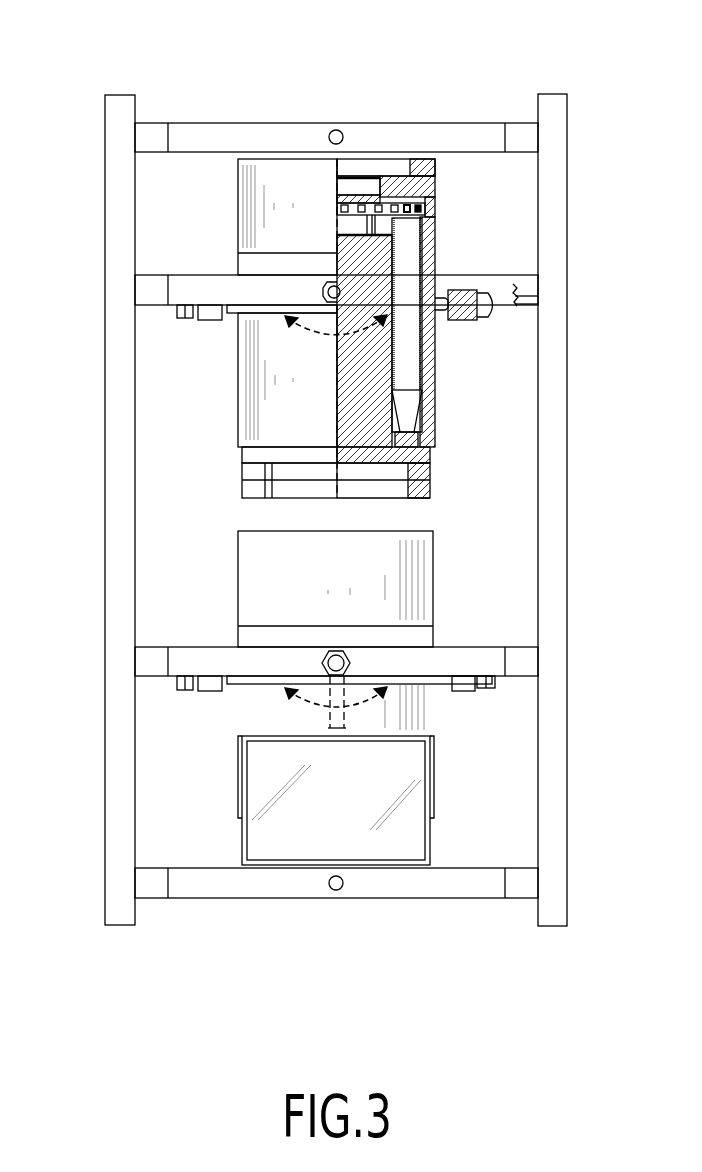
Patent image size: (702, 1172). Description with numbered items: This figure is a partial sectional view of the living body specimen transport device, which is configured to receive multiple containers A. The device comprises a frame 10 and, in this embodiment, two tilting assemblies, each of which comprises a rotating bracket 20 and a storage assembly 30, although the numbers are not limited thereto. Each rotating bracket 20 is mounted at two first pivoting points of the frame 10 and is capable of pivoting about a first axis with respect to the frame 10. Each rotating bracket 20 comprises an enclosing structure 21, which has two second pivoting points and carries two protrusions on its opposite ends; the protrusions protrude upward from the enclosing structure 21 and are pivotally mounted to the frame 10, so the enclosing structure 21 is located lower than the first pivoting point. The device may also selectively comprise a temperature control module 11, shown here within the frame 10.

The frame 10 is at (117, 74).
The temperature control module 11 is at (303, 845).
The rotating bracket 20 is at (208, 332).
The enclosing structure 21 is at (477, 655).
The storage assembly 30 is at (224, 204).
The container A is at (408, 343).